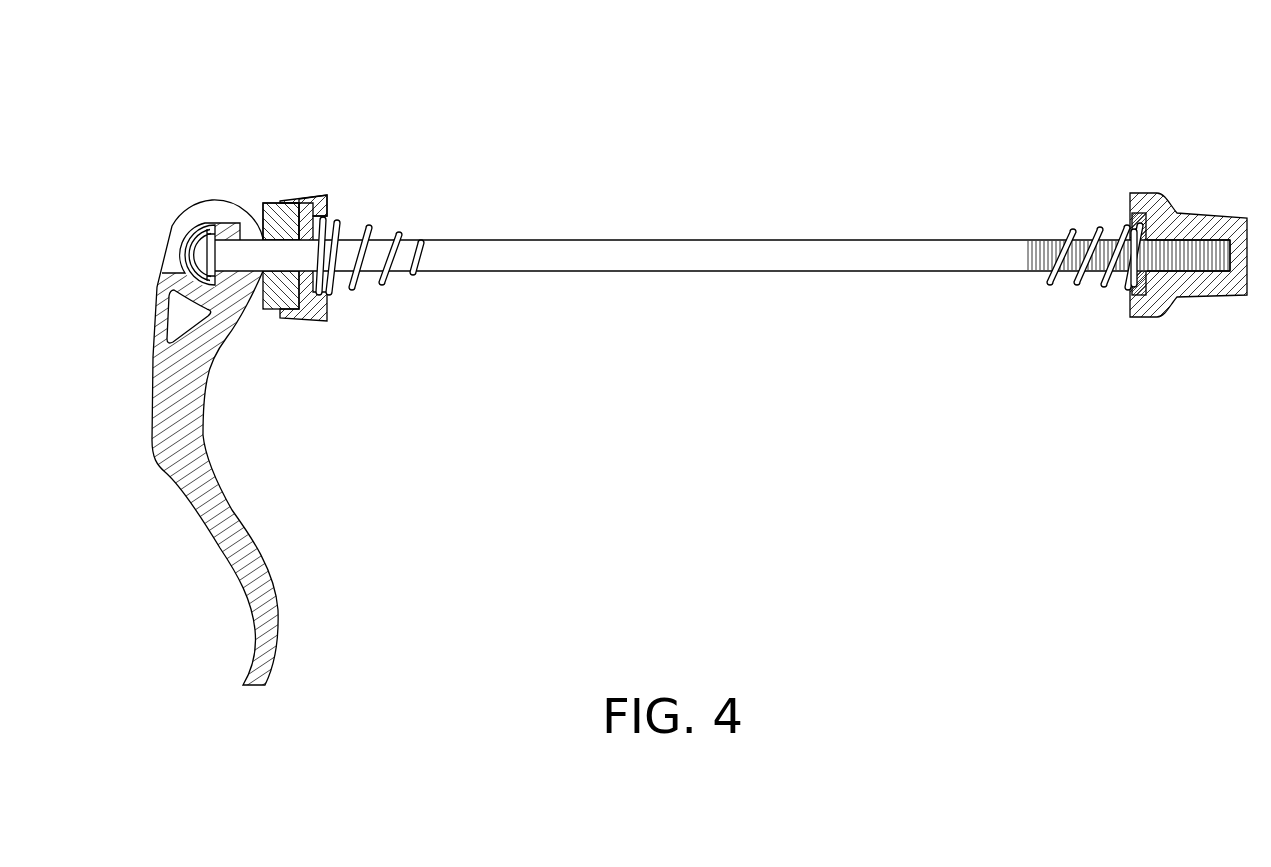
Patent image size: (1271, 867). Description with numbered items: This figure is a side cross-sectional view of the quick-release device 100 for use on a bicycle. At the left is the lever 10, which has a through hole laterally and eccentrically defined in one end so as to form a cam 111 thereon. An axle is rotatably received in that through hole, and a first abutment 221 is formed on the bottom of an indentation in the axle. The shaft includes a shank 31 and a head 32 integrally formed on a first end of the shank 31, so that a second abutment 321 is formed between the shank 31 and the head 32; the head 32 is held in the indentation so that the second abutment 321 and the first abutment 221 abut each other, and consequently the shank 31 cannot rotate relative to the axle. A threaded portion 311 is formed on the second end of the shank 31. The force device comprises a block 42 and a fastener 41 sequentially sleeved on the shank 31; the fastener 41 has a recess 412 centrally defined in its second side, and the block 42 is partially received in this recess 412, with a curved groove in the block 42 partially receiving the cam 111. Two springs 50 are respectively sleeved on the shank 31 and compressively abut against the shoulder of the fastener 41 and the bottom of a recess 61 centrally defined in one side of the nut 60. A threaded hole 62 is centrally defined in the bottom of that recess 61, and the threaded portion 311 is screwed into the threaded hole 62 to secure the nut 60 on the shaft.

The quick-release device 100 is at (977, 127).
The lever 10 is at (265, 595).
The cam 111 is at (267, 203).
The first abutment 221 is at (206, 225).
The head 32 is at (198, 253).
The second abutment 321 is at (207, 280).
The shank 31 is at (780, 255).
The threaded portion 311 is at (1187, 258).
The fastener 41 is at (318, 320).
The block 42 is at (270, 309).
The recess 412 is at (307, 200).
The spring 50 is at (362, 230).
The nut 60 is at (1183, 223).
The recess 61 is at (1143, 217).
The threaded hole 62 is at (1203, 250).